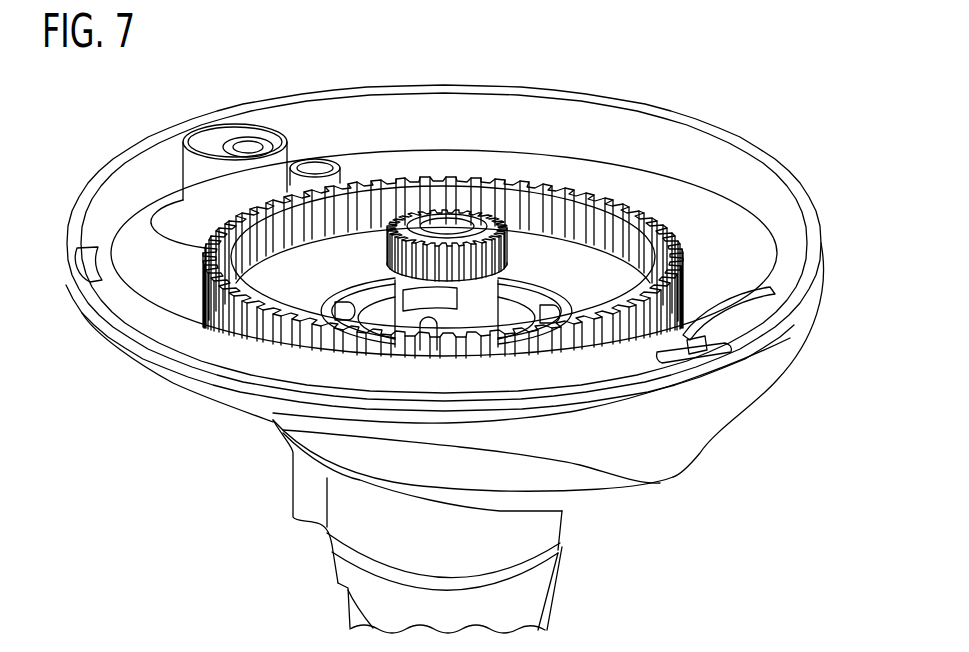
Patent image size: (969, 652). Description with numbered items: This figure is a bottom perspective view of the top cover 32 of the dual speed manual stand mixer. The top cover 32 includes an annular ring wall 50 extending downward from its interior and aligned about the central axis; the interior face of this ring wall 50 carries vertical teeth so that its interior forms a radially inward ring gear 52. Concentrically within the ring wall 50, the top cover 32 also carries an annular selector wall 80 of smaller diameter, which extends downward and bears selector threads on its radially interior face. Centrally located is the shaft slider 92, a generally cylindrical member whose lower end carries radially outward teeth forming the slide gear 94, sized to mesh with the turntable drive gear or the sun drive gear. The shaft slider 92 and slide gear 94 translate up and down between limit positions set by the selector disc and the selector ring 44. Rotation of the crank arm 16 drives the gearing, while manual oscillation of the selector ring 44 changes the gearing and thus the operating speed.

The crank arm 16 is at (523, 598).
The top cover 32 is at (717, 427).
The selector ring 44 is at (367, 527).
The annular ring wall 50 is at (203, 271).
The ring gear 52 is at (628, 258).
The selector wall 80 is at (327, 313).
The shaft slider 92 is at (405, 317).
The slide gear 94 is at (386, 249).